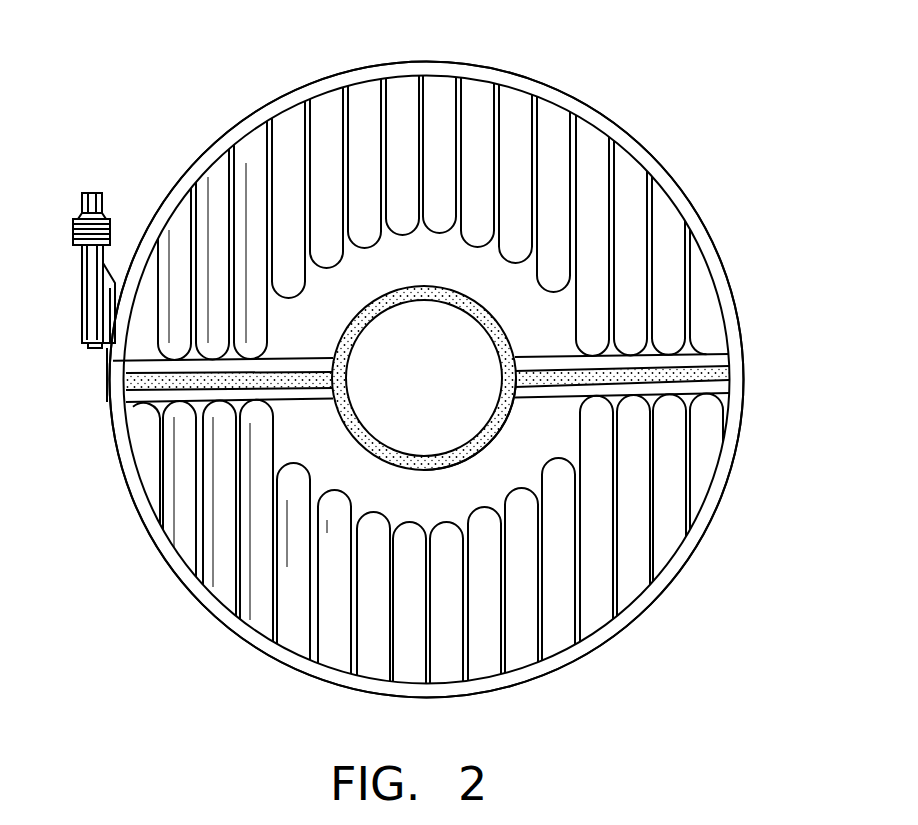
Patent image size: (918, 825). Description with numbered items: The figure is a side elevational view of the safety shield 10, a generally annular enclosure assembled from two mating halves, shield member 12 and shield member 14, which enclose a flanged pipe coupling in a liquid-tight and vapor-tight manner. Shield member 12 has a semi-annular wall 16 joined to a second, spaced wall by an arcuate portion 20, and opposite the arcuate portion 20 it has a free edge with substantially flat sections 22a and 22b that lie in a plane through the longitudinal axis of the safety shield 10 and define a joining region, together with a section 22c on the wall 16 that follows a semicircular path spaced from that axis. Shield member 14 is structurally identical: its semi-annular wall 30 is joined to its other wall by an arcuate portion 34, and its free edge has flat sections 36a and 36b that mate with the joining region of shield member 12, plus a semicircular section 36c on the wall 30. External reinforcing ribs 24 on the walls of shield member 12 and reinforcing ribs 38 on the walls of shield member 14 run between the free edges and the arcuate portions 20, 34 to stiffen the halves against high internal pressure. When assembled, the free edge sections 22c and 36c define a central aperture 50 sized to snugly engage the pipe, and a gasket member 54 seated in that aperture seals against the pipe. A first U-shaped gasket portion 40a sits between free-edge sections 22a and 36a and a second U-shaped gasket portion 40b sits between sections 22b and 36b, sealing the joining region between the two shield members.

The safety shield 10 is at (592, 73).
The shield member 12 is at (627, 172).
The shield member 14 is at (267, 605).
The semi-annular wall 16 is at (288, 122).
The arcuate portion 20 is at (453, 72).
The external reinforcing ribs 24 is at (388, 97).
The flat section of free edge 22a is at (703, 355).
The flat section of free edge 22b is at (123, 378).
The semicircular section of free edge 22c is at (455, 292).
The semi-annular wall 30 is at (637, 570).
The arcuate portion 34 is at (520, 682).
The flat section of free edge 36a is at (707, 390).
The flat section of free edge 36b is at (142, 400).
The semicircular section of free edge 36c is at (481, 458).
The reinforcing ribs 38 is at (357, 627).
The first U-shaped gasket portion 40a is at (717, 378).
The second U-shaped gasket portion 40b is at (130, 381).
The aperture 50 is at (437, 372).
The gasket member 54 is at (356, 428).